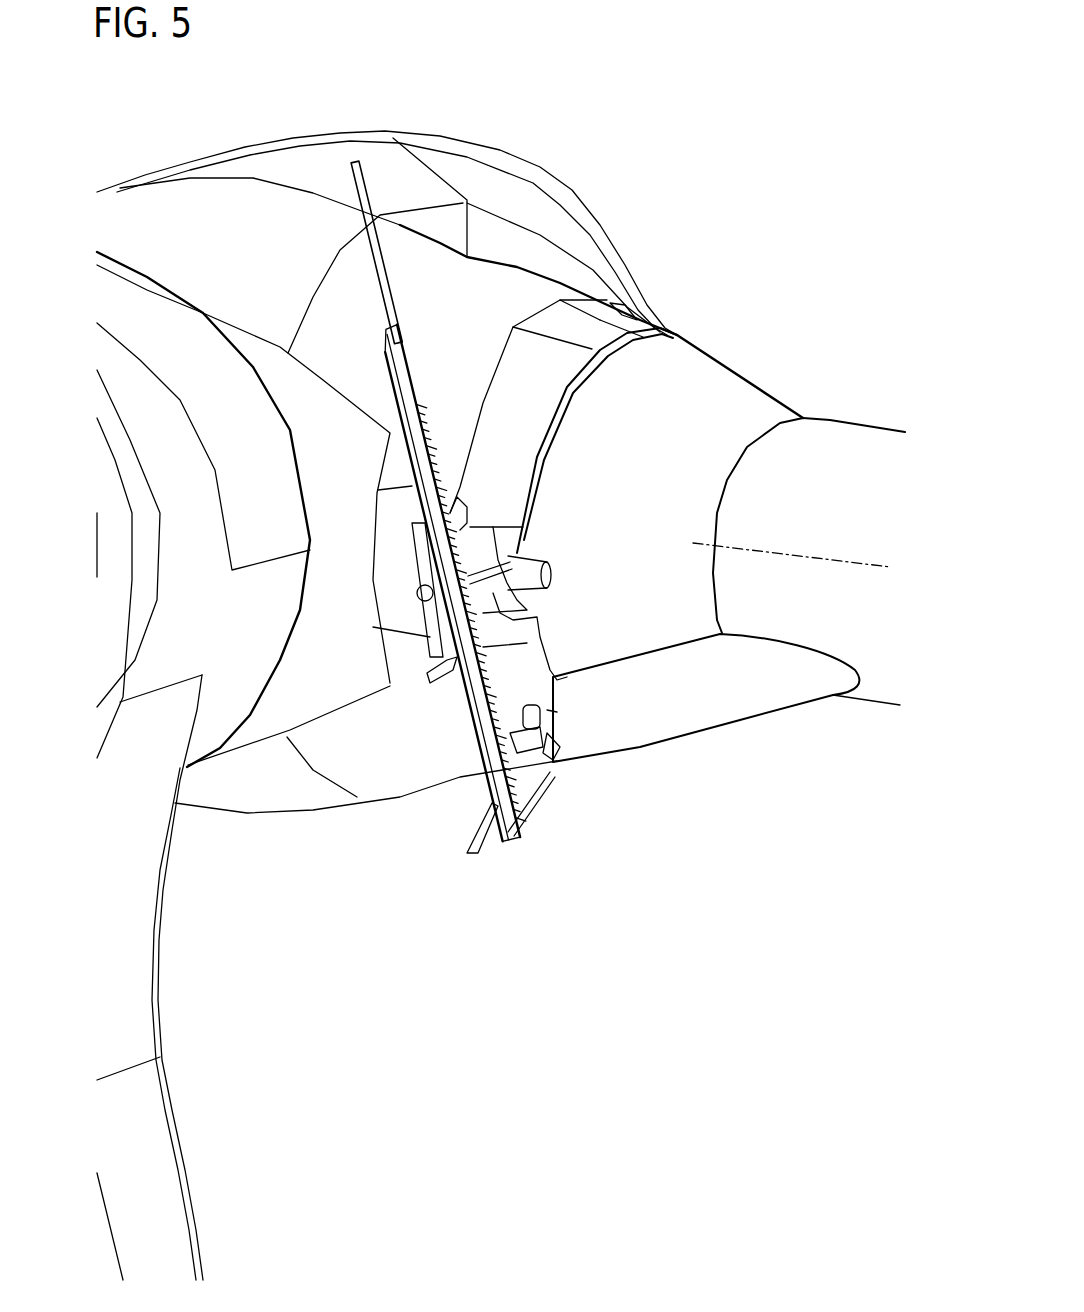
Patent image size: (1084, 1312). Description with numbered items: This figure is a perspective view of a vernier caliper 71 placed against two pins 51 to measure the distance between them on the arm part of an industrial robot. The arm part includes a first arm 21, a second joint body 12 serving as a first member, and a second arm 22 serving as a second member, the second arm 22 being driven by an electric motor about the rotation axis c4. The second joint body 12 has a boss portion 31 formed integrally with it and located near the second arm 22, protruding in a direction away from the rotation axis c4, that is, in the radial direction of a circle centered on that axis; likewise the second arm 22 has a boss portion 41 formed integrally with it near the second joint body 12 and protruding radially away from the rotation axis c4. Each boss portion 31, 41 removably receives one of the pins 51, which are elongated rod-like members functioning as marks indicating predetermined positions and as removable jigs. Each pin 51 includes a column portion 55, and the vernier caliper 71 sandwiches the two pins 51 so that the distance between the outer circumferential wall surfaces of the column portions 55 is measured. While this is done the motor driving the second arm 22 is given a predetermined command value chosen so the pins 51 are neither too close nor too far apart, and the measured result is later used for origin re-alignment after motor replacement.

The second joint body 12 is at (450, 454).
The first arm 21 is at (188, 977).
The second arm 22 is at (809, 495).
The boss portion 31 is at (470, 537).
The boss portion 41 is at (706, 745).
The pin 51 is at (574, 679).
The column portion 55 is at (565, 682).
The vernier caliper 71 is at (447, 523).
The rotation axis c4 is at (791, 436).